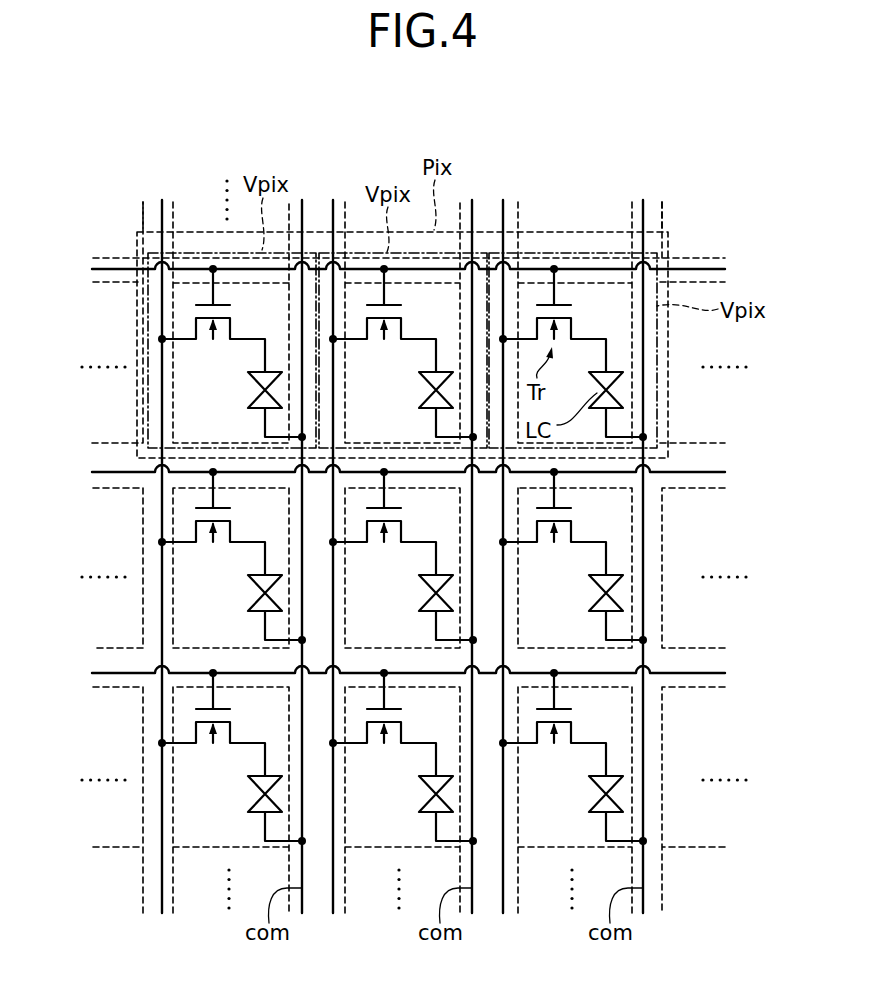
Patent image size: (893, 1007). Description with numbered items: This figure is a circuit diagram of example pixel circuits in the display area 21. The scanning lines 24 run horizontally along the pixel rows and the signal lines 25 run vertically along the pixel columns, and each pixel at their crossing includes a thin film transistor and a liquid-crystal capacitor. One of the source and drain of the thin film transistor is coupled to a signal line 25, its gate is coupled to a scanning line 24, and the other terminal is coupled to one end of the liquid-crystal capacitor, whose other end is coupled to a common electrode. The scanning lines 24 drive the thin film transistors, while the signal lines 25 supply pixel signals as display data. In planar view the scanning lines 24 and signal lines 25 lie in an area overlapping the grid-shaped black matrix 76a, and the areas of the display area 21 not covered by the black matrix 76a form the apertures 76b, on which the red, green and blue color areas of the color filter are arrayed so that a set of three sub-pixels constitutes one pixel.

The display area 21 is at (644, 172).
The scanning line 24 is at (130, 269).
The signal line 25 is at (162, 893).
The black matrix 76a is at (713, 257).
The aperture 76b is at (598, 295).